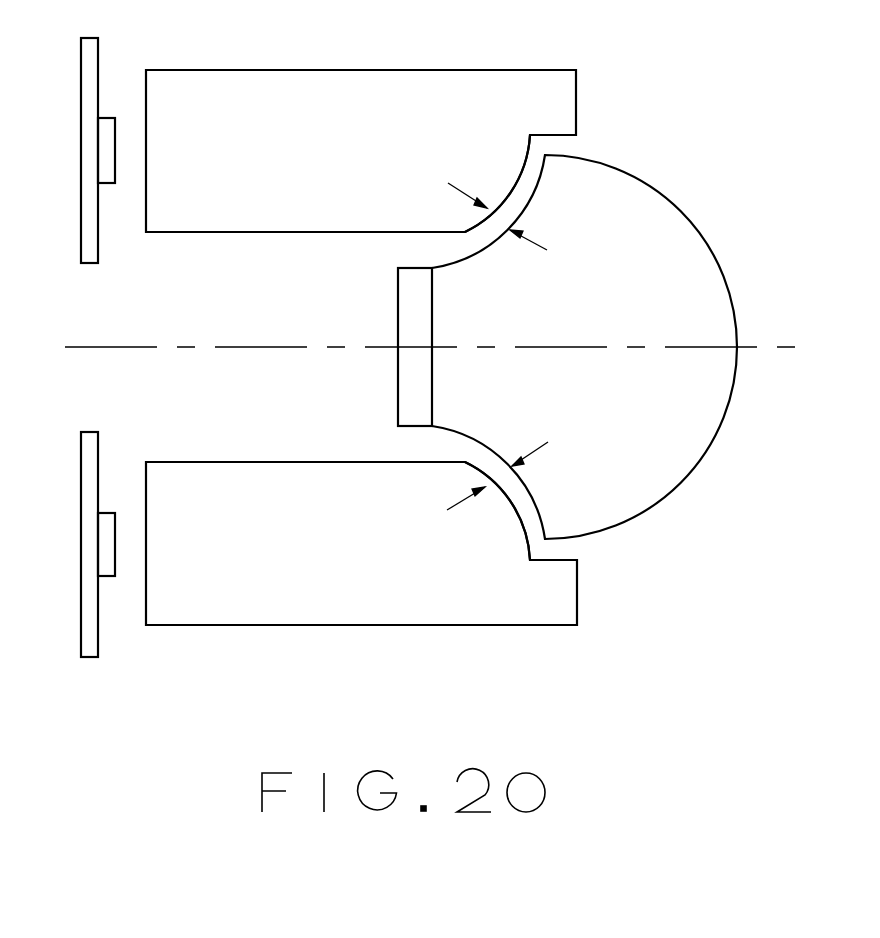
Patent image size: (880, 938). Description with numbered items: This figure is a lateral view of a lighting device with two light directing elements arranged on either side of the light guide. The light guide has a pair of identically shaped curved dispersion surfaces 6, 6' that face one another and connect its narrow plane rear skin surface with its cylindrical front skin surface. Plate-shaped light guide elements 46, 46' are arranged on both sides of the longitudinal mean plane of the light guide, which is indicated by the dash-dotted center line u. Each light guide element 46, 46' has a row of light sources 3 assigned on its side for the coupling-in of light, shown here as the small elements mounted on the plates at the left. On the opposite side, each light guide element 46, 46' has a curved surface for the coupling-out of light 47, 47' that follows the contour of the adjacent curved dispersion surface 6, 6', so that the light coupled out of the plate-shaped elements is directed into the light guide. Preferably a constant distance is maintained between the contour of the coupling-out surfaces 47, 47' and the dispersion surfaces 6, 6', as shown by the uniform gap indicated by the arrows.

The light source 3 is at (105, 158).
The curved dispersion surface 6 is at (551, 325).
The curved dispersion surface 6' is at (567, 349).
The plate-shaped light guide element 46 is at (361, 151).
The plate-shaped light guide element 46' is at (361, 543).
The curved surface for the coupling-out of light 47 is at (497, 131).
The curved surface for the coupling-out of light 47' is at (490, 570).
The axis u is at (737, 347).